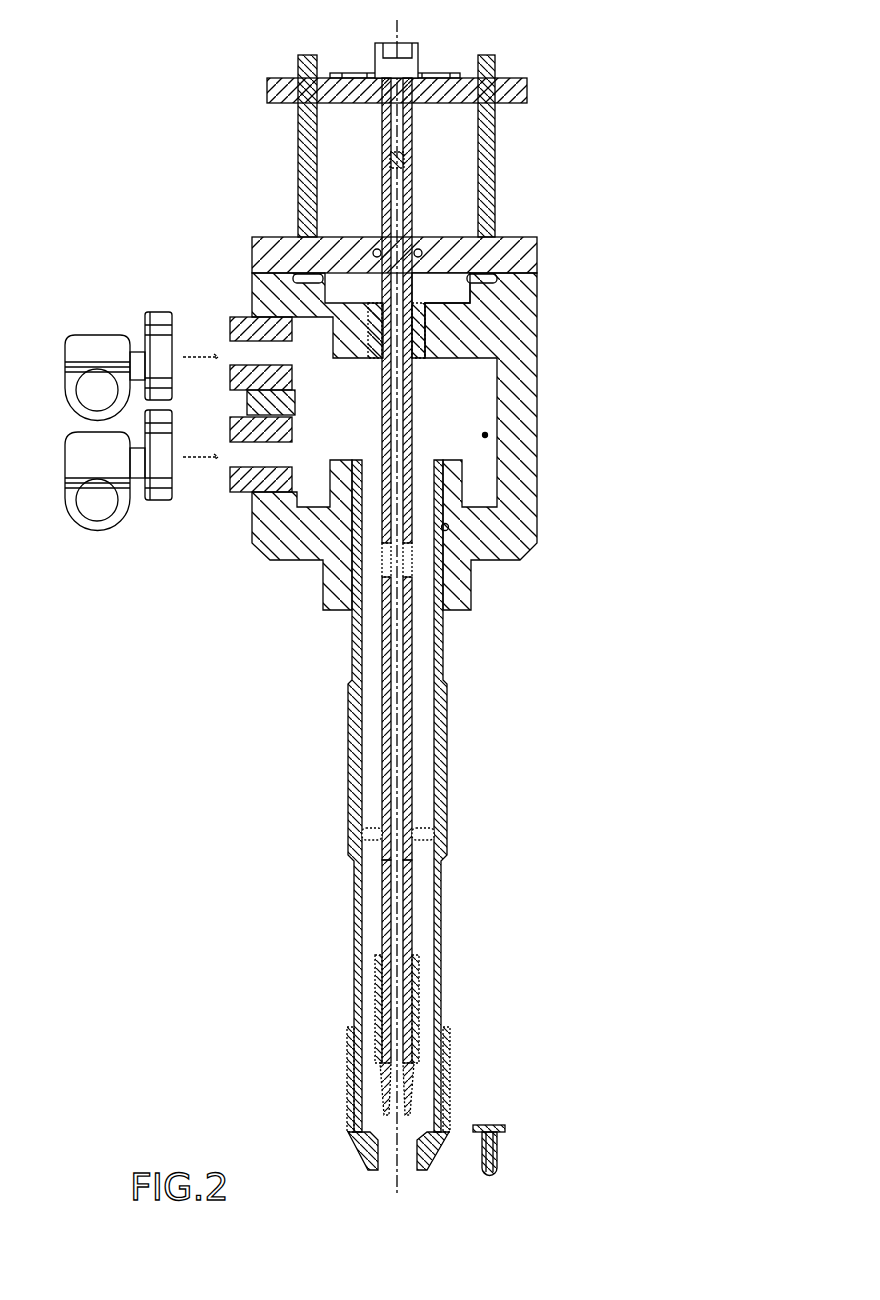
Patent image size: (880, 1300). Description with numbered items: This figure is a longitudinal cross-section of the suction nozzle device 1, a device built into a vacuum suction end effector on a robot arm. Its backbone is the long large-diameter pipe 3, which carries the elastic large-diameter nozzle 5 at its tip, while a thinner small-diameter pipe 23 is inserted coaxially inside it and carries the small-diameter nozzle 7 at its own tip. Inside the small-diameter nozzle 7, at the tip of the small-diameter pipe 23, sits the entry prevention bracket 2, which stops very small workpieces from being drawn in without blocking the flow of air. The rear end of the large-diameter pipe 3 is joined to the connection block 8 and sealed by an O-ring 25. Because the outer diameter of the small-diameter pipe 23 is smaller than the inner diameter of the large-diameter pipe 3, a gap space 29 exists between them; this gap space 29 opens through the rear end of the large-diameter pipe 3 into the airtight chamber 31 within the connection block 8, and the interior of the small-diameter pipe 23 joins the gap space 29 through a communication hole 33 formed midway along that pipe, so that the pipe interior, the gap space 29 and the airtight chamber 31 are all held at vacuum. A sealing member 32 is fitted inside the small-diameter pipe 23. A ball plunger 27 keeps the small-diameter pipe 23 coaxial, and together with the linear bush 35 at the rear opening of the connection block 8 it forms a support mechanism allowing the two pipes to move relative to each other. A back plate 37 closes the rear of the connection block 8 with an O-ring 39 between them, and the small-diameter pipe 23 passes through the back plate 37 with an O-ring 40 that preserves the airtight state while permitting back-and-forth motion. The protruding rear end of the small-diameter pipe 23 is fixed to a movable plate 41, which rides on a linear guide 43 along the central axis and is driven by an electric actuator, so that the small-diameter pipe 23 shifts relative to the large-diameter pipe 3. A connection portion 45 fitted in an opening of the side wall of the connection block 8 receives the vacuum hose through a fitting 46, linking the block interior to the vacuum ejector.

The suction nozzle device 1 is at (337, 597).
The entry prevention bracket 2 is at (405, 1120).
The large-diameter pipe 3 is at (447, 722).
The large-diameter nozzle 5 is at (445, 1083).
The small-diameter nozzle 7 is at (378, 1078).
The connection block 8 is at (537, 403).
The small-diameter pipe 23 is at (383, 758).
The O-ring 25 is at (448, 527).
The ball plunger 27 is at (420, 822).
The gap space 29 is at (418, 902).
The airtight chamber 31 is at (487, 435).
The sealing member 32 is at (405, 158).
The communication hole 33 is at (413, 565).
The linear bush 35 is at (425, 336).
The back plate 37 is at (537, 240).
The O-ring 39 is at (537, 276).
The O-ring 40 is at (422, 254).
The movable plate 41 is at (267, 92).
The linear guide 43 is at (555, 52).
The connection portion 45 is at (237, 317).
The fitting 46 is at (65, 365).